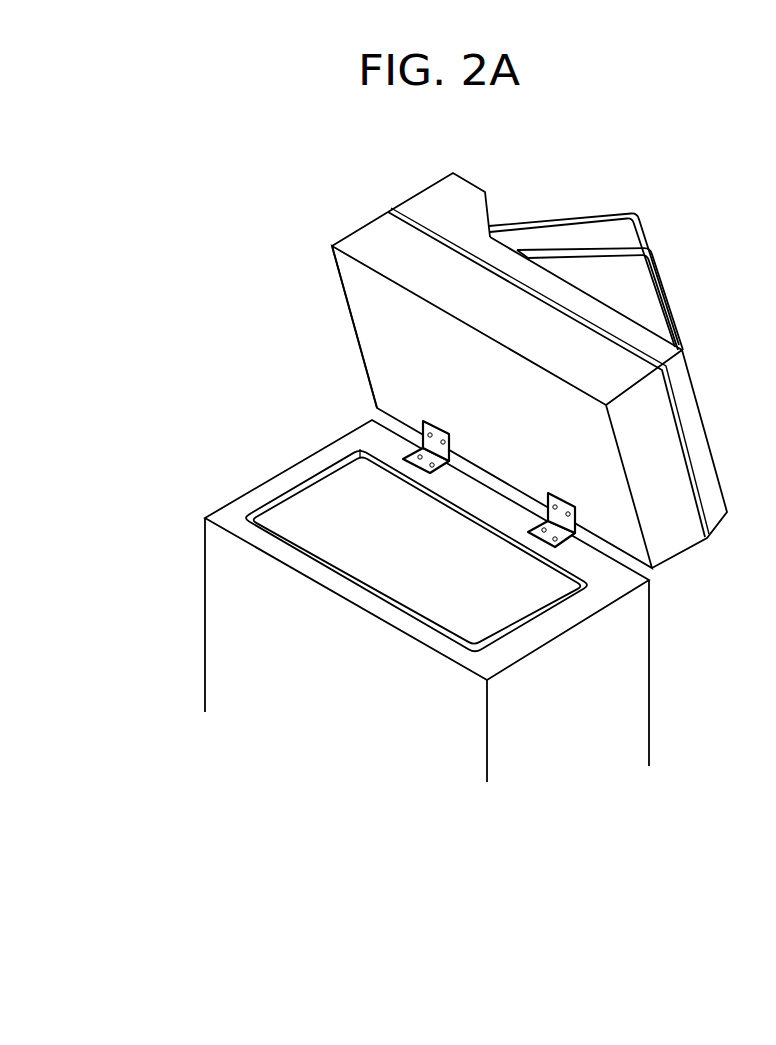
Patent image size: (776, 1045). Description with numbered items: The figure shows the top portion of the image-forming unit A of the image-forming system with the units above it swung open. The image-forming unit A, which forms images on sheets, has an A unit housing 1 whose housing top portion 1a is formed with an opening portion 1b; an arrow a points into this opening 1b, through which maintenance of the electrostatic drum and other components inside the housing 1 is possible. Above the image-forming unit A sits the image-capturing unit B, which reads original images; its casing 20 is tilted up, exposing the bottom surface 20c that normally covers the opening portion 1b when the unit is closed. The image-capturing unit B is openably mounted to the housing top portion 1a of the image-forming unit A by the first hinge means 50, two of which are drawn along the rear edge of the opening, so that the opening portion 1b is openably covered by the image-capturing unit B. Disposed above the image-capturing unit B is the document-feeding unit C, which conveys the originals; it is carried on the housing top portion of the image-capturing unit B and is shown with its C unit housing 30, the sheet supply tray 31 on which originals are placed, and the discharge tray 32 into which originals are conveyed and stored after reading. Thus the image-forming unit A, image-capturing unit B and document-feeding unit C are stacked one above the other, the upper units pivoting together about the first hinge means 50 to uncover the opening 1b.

The A unit housing 1 is at (212, 581).
The housing top portion 1a is at (310, 463).
The opening portion 1b is at (308, 513).
The lid 20 is at (375, 245).
The bottom surface 20c is at (372, 321).
The C unit housing 30 is at (462, 193).
The sheet supply tray 31 is at (597, 213).
The discharge tray 32 is at (665, 270).
The first hinge means 50 is at (407, 457).
The interior space a is at (431, 604).
The image-forming unit A is at (643, 690).
The image-capturing unit B is at (692, 530).
The document-feeding unit C is at (706, 418).